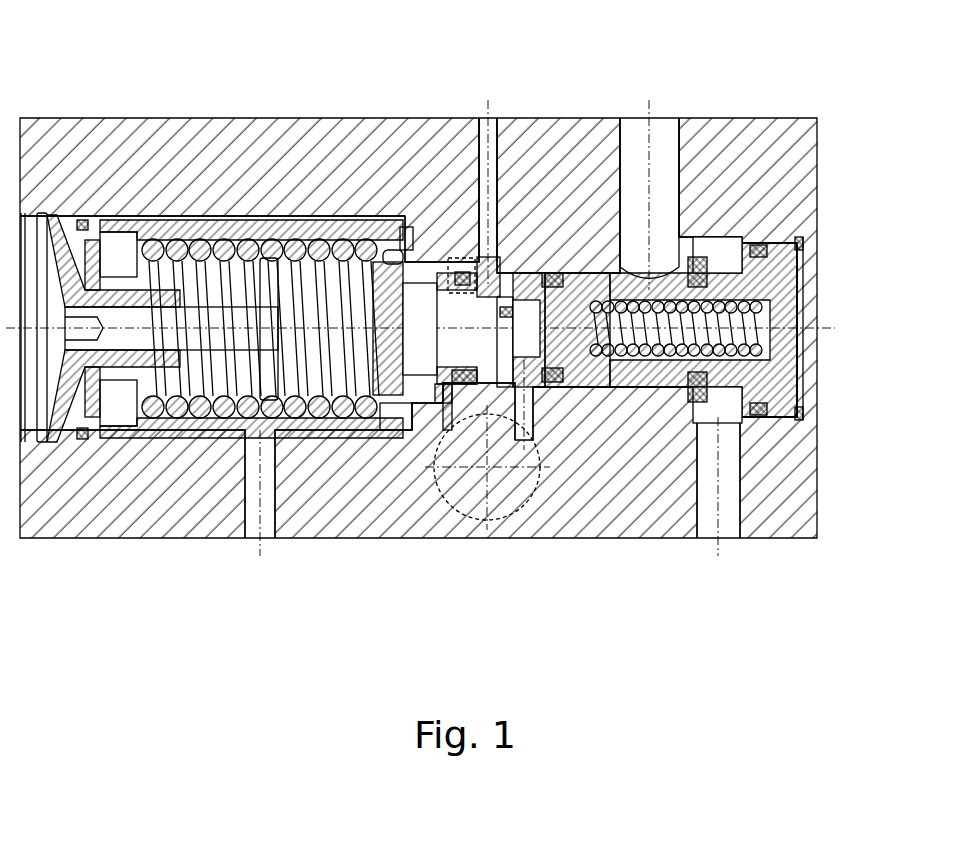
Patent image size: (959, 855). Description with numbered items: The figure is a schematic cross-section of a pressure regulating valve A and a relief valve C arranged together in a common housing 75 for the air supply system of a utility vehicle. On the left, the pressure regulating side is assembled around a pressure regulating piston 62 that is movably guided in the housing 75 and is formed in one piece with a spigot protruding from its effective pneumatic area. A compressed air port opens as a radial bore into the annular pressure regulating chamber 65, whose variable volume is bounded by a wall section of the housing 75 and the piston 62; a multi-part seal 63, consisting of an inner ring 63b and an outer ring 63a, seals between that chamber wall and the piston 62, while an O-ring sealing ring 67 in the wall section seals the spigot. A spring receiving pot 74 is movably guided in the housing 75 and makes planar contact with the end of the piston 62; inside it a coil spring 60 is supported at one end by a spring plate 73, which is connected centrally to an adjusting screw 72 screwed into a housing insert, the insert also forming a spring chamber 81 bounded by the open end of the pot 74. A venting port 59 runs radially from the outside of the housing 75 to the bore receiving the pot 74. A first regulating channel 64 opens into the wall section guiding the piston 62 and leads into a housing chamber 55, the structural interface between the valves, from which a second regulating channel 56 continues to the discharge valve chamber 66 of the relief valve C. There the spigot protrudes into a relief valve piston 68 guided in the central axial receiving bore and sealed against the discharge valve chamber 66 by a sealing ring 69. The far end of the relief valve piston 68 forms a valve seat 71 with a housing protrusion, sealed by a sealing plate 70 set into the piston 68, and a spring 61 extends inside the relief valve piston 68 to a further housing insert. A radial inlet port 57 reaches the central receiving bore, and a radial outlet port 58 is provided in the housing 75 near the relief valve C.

The adjusting screw 72 is at (210, 320).
The spring plate 73 is at (225, 265).
The spring 60 is at (295, 250).
The spring receiving pot 74 is at (387, 273).
The pressure regulating piston 62 is at (432, 278).
The multi-part seal 63 is at (460, 262).
The pressure regulating chamber 65 is at (480, 273).
The sealing ring 67 is at (515, 308).
The relief valve piston 68 is at (573, 303).
The inlet port 57 is at (654, 187).
The relief valve C is at (728, 179).
The sealing plate 70 is at (698, 275).
The housing 75 is at (783, 206).
The spring chamber 81 is at (118, 408).
The venting port 59 is at (254, 498).
The pressure regulating valve A is at (378, 447).
The first regulating channel 64 is at (447, 412).
The housing chamber 55 is at (447, 453).
The outer ring 63a is at (455, 387).
The inner ring 63b is at (465, 373).
The second regulating channel 56 is at (525, 370).
The discharge valve chamber 66 is at (527, 412).
The sealing ring 69 is at (555, 377).
The spring 61 is at (640, 350).
The outlet port 58 is at (728, 455).
The valve seat 71 is at (685, 388).